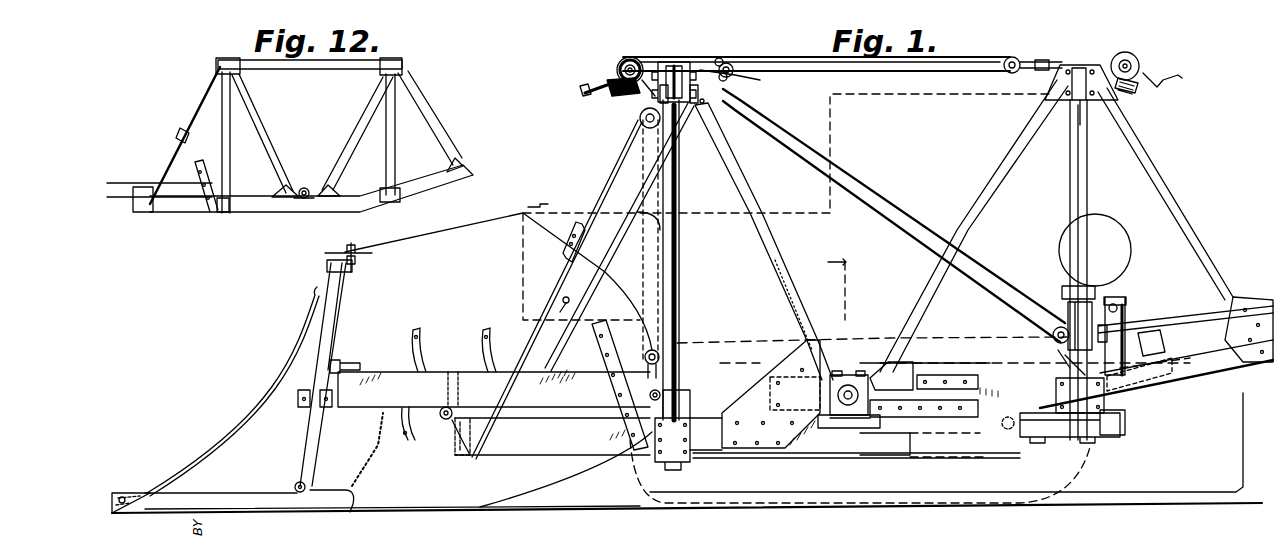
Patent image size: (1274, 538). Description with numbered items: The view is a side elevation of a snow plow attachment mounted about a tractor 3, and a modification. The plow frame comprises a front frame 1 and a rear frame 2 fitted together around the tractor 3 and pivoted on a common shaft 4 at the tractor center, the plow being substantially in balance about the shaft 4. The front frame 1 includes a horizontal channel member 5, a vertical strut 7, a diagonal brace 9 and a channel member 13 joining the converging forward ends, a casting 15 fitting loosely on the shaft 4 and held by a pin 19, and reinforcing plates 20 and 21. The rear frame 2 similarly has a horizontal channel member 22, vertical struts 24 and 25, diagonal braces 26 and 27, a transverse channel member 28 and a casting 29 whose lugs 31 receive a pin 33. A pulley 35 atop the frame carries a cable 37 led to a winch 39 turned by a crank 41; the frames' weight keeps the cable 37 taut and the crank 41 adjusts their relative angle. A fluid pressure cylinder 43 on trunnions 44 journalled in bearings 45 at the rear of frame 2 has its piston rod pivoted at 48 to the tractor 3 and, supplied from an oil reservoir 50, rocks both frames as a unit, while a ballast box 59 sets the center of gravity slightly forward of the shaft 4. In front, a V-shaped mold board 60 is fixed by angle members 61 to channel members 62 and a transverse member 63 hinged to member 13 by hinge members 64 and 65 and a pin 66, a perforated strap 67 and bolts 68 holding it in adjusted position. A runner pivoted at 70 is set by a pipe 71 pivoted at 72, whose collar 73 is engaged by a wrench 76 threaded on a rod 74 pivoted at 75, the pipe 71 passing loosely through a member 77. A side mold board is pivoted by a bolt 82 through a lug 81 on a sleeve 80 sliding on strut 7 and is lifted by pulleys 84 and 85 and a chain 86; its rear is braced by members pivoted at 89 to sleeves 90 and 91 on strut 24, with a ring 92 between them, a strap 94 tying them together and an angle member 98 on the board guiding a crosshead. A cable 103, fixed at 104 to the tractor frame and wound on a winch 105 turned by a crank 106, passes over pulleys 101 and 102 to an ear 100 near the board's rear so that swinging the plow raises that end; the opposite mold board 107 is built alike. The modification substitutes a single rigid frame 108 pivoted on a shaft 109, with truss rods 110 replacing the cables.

In FIG. 1, the front frame 1 is at (676, 60).
In FIG. 1, the rear frame 2 is at (1080, 62).
In FIG. 1, the tractor 3 is at (900, 60).
In FIG. 1, the shaft 4 is at (859, 371).
In FIG. 1, the horizontal channel member 5 is at (710, 452).
In FIG. 1, the vertical strut 7 is at (681, 262).
In FIG. 1, the diagonal brace 9 is at (768, 245).
In FIG. 1, the channel member 13 is at (460, 428).
In FIG. 1, the casting 15 is at (836, 371).
In FIG. 1, the pin 19 is at (870, 370).
In FIG. 1, the reinforcing plate 20 is at (757, 392).
In FIG. 1, the reinforcing plate 21 is at (680, 105).
In FIG. 1, the horizontal channel member 22 is at (996, 412).
In FIG. 1, the vertical strut 24 is at (1090, 185).
In FIG. 1, the vertical strut 25 is at (1018, 58).
In FIG. 1, the diagonal brace 26 is at (995, 188).
In FIG. 1, the diagonal brace 27 is at (1183, 190).
In FIG. 1, the transverse channel member 28 is at (1084, 110).
In FIG. 1, the casting 29 is at (890, 400).
In FIG. 1, the lugs 31 is at (832, 402).
In FIG. 1, the pin 33 is at (850, 340).
In FIG. 1, the pulley 35 is at (730, 62).
In FIG. 1, the cable 37 is at (794, 56).
In FIG. 1, the winch 39 is at (622, 60).
In FIG. 1, the crank 41 is at (600, 84).
In FIG. 1, the fluid pressure cylinder 43 is at (1130, 327).
In FIG. 1, the trunnions 44 is at (1135, 362).
In FIG. 1, the bearings 45 is at (1160, 348).
In FIG. 1, the pivotal connection 48 is at (1126, 305).
In FIG. 1, the oil reservoir 50 is at (1127, 238).
In FIG. 1, the ballast box 59 is at (1215, 372).
In FIG. 1, the V-shaped mold board 60 is at (301, 323).
In FIG. 1, the angle members 61 is at (422, 337).
In FIG. 1, the channel members 62 is at (262, 513).
In FIG. 1, the transverse channel member 63 is at (462, 393).
In FIG. 1, the hinge member 64 is at (447, 392).
In FIG. 1, the hinge member 65 is at (455, 430).
In FIG. 1, the pin 66 is at (441, 418).
In FIG. 1, the perforated strap 67 is at (612, 348).
In FIG. 1, the bolts 68 is at (615, 391).
In FIG. 1, the pivot 70 is at (124, 496).
In FIG. 1, the pipe 71 is at (318, 428).
In FIG. 1, the pivot 72 is at (296, 484).
In FIG. 1, the collar 73 is at (328, 262).
In FIG. 1, the screw threaded rod 74 is at (344, 315).
In FIG. 1, the pivot 75 is at (342, 363).
In FIG. 1, the adjusting nut or wrench 76 is at (365, 251).
In FIG. 1, the member 77 is at (306, 392).
In FIG. 1, the sleeve 80 is at (690, 400).
In FIG. 1, the apertured lug 81 is at (622, 420).
In FIG. 1, the bolt 82 is at (661, 395).
In FIG. 1, the pulley 84 is at (660, 350).
In FIG. 1, the pulley 85 is at (640, 120).
In FIG. 1, the chain 86 is at (643, 248).
In FIG. 1, the pivotal connection 89 is at (1067, 290).
In FIG. 1, the sleeve 90 is at (1068, 305).
In FIG. 1, the sleeve 91 is at (1056, 386).
In FIG. 1, the ring 92 is at (1068, 362).
In FIG. 1, the strap 94 is at (1053, 333).
In FIG. 1, the angle member 98 is at (1006, 535).
In FIG. 1, the ear 100 is at (1032, 533).
In FIG. 1, the pulley 101 is at (712, 115).
In FIG. 1, the pulley 102 is at (745, 80).
In FIG. 1, the cable 103 is at (950, 58).
In FIG. 1, the fixed point 104 is at (568, 297).
In FIG. 1, the winch 105 is at (1138, 58).
In FIG. 1, the crank 106 is at (1162, 78).
In FIG. 1, the mold board 107 is at (1170, 488).
In FIG. 12, the rigid frame 108 is at (262, 136).
In FIG. 12, the shaft 109 is at (306, 186).
In FIG. 12, the truss rods 110 is at (314, 70).